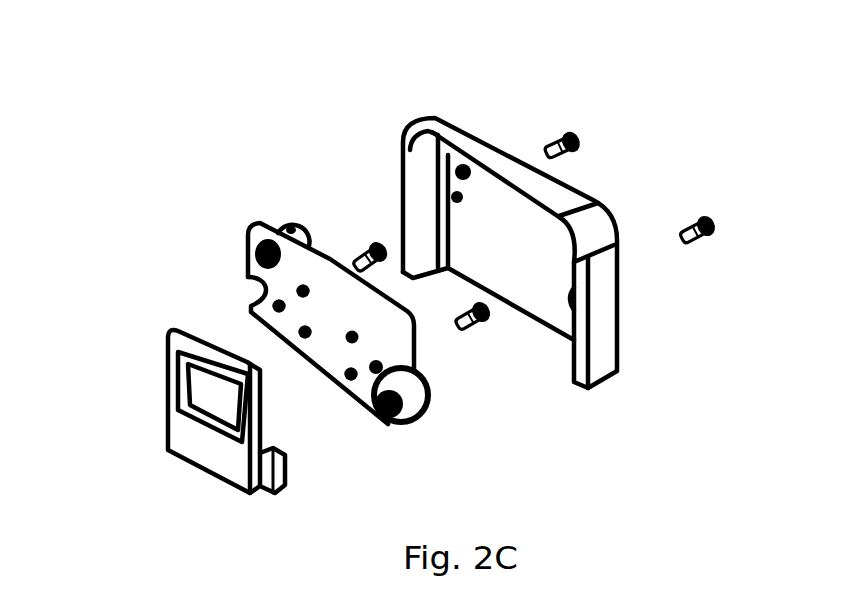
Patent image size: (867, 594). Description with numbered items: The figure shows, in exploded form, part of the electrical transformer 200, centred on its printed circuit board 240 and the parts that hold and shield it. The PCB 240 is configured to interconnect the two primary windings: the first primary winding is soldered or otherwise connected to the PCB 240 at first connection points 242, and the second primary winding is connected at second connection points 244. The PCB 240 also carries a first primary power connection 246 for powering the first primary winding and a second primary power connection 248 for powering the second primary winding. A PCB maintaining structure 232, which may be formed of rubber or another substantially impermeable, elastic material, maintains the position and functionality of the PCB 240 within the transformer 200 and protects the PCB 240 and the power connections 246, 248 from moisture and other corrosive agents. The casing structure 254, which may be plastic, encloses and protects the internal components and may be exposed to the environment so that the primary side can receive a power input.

The transformer 200 is at (280, 116).
The PCB maintaining structure 232 is at (185, 432).
The printed circuit board 240 is at (410, 351).
The first connection points 242 is at (273, 302).
The second connection points 244 is at (345, 370).
The first primary power connection 246 is at (282, 223).
The second primary power connection 248 is at (430, 406).
The casing structure 254 is at (600, 295).